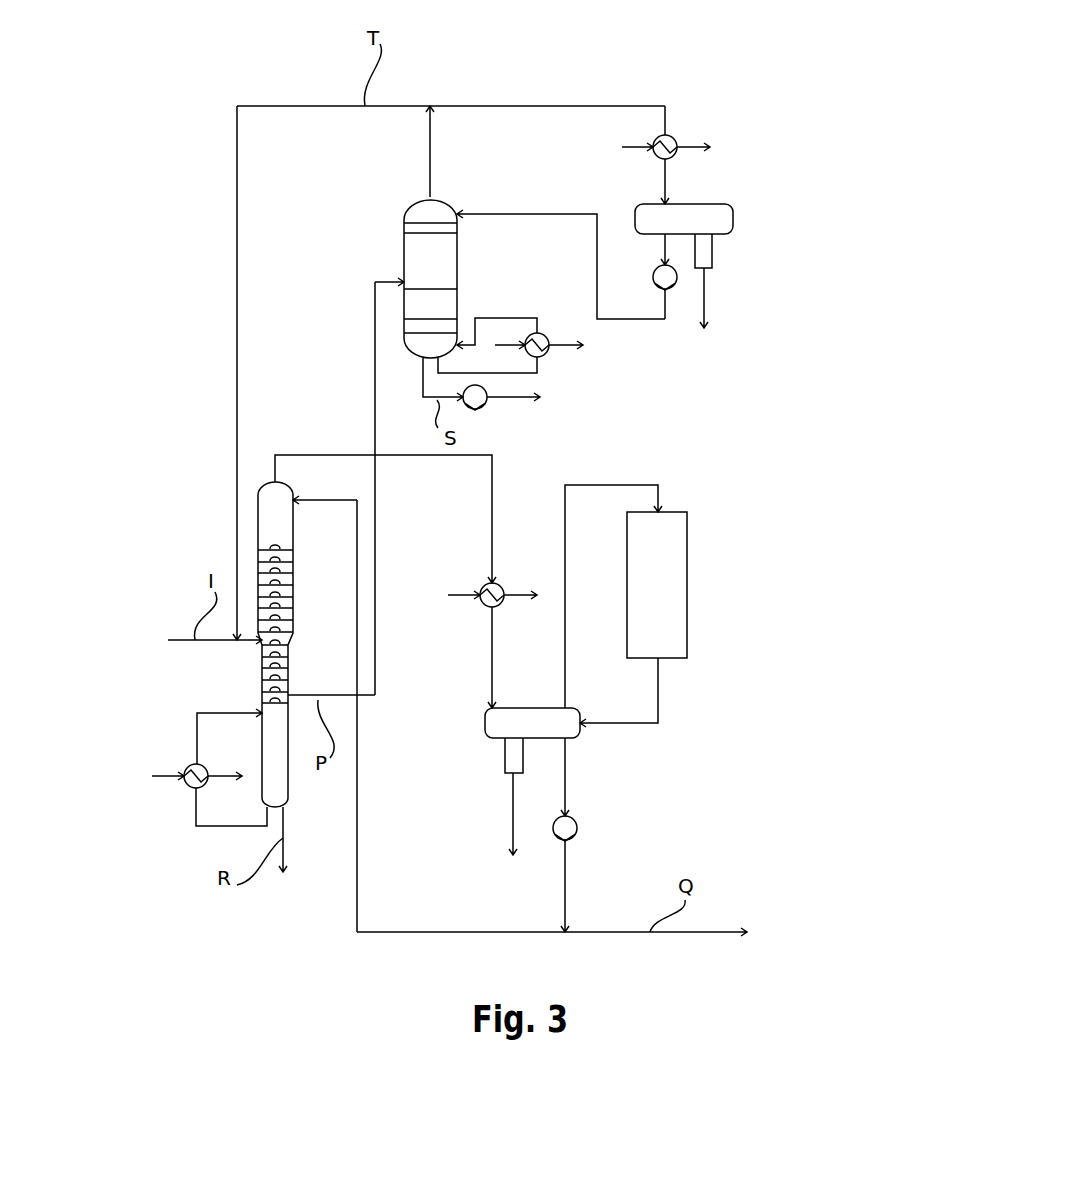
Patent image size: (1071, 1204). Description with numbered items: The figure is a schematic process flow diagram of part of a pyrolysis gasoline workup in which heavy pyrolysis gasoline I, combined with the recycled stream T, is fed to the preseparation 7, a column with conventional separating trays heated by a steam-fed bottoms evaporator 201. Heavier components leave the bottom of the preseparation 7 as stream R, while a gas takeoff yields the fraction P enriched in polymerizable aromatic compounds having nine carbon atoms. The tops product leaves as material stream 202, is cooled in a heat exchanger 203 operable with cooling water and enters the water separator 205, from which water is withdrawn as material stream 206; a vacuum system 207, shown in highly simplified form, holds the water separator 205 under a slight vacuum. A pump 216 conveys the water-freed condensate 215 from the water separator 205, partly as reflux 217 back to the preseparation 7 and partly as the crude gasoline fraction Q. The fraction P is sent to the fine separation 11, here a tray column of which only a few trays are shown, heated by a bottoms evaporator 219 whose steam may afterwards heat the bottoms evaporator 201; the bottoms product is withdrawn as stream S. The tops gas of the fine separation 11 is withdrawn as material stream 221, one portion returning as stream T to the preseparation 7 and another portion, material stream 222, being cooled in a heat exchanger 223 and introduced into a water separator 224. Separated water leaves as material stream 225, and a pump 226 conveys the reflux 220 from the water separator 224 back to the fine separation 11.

The preseparation 7 is at (258, 530).
The fine separation 11 is at (404, 235).
The bottoms evaporator 201 is at (188, 765).
The material stream 202 is at (275, 470).
The heat exchanger 203 is at (480, 585).
The water separator 205 is at (480, 722).
The material stream 206 is at (510, 808).
The vacuum system 207 is at (626, 606).
The condensate 215 is at (565, 788).
The pump 216 is at (578, 830).
The reflux 217 is at (450, 932).
The bottoms evaporator 219 is at (545, 335).
The reflux 220 is at (503, 214).
The material stream 221 is at (430, 165).
The material stream 222 is at (542, 106).
The heat exchanger 223 is at (675, 135).
The water separator 224 is at (730, 203).
The material stream 225 is at (705, 308).
The pump 226 is at (700, 272).